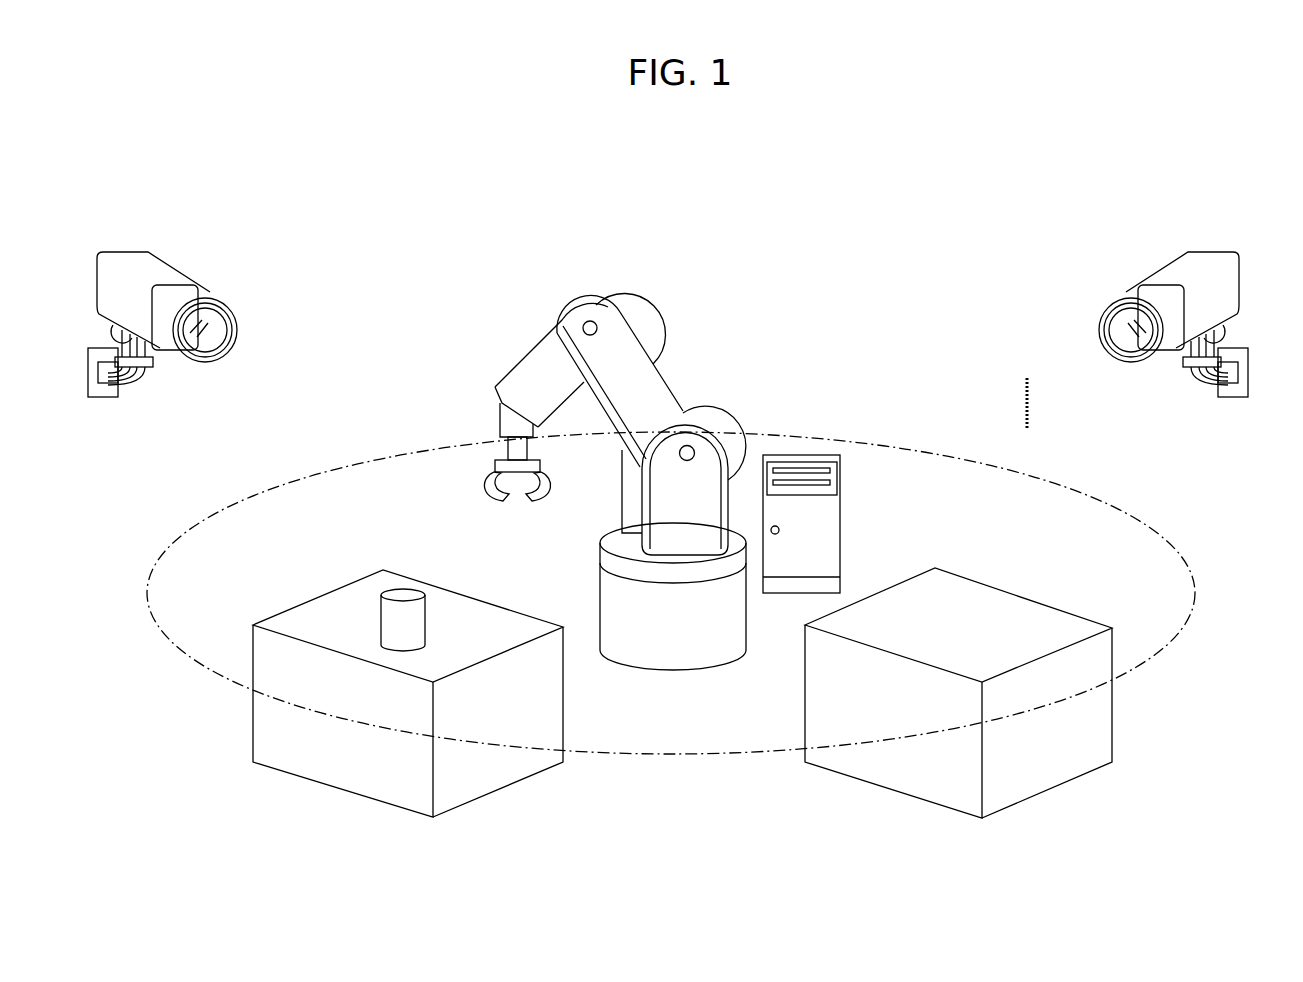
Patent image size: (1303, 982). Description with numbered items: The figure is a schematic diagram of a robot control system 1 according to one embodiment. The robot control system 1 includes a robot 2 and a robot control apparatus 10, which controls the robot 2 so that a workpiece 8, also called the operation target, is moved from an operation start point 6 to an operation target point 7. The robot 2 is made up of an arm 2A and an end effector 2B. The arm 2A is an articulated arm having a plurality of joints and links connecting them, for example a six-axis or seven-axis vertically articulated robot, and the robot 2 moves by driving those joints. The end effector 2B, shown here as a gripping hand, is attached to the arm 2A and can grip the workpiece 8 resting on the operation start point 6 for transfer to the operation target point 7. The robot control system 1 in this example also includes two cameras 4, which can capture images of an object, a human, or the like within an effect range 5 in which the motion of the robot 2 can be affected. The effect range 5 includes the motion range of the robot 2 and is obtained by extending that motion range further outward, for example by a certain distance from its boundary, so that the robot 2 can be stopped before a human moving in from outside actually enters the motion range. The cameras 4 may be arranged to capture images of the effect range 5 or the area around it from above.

The robot control system 1 is at (353, 200).
The robot 2 is at (581, 437).
The arm 2A is at (523, 362).
The end effector 2B is at (488, 482).
The camera 4 is at (165, 258).
The effect range 5 is at (894, 448).
The operation start point 6 is at (461, 636).
The operation target point 7 is at (934, 628).
The workpiece 8 is at (398, 572).
The robot control apparatus 10 is at (840, 533).